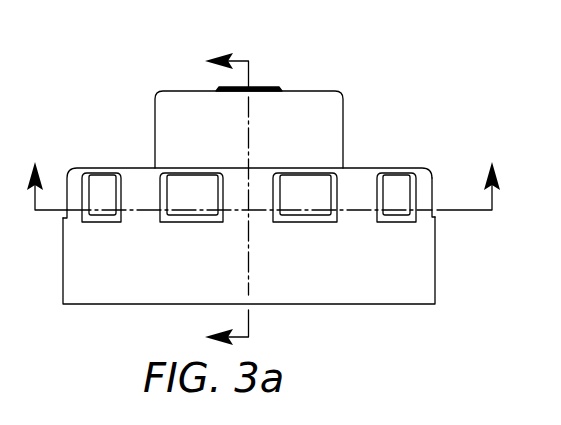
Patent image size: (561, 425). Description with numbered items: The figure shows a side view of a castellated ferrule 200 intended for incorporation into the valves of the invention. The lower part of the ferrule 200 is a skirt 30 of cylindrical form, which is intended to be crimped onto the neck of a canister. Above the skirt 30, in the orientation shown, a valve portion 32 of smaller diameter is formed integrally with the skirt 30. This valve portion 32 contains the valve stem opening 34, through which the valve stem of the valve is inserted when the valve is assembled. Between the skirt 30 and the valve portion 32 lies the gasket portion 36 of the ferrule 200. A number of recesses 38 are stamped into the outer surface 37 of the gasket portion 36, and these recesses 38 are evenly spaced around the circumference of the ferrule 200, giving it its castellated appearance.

The castellated ferrule 200 is at (131, 59).
The skirt 30 is at (435, 289).
The valve portion 32 is at (343, 96).
The valve stem opening 34 is at (258, 87).
The gasket portion 36 is at (422, 170).
The outer surface 37 is at (440, 187).
The recesses 38 is at (100, 180).